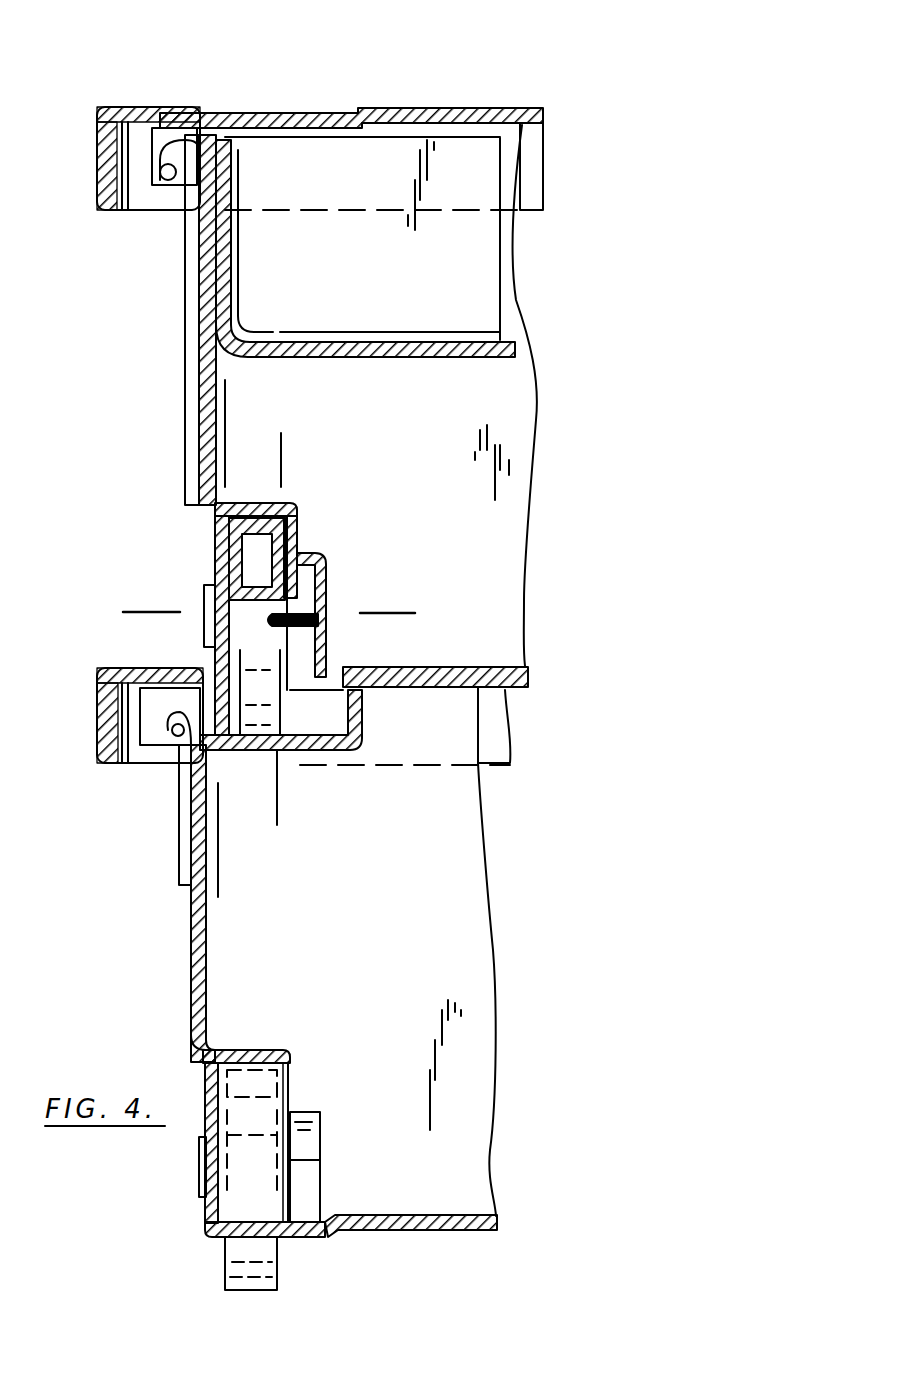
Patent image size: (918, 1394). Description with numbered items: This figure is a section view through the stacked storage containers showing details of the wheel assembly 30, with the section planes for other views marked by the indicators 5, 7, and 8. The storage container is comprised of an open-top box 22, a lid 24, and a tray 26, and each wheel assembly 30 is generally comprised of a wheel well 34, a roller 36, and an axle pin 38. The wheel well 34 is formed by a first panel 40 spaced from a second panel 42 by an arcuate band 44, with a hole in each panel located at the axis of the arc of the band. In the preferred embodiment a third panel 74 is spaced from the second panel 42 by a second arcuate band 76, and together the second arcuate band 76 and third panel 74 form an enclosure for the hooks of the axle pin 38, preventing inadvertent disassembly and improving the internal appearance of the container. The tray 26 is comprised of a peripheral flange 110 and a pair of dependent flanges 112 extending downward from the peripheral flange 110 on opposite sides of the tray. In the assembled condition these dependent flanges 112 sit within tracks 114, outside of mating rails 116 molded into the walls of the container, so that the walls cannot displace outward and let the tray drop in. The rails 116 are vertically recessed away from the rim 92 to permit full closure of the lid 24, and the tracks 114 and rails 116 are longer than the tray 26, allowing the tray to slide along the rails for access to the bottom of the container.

The open-top box 22 is at (185, 400).
The lid 24 is at (552, 107).
The tray 26 is at (485, 267).
The wheel assembly 30 is at (306, 704).
The wheel well 34 is at (306, 507).
The roller 36 is at (178, 778).
The axle pin 38 is at (204, 627).
The first panel 40 is at (299, 538).
The second panel 42 is at (215, 543).
The arcuate band 44 is at (246, 502).
The third panel 74 is at (322, 637).
The second arcuate band 76 is at (313, 553).
The rim 92 is at (152, 117).
The peripheral flange 110 is at (202, 117).
The dependent flange 112 is at (172, 160).
The track 114 is at (167, 180).
The mating rail 116 is at (183, 197).
The section line 5- 5 is at (140, 608).
The section line 7- 7 is at (228, 400).
The section line 8- 8 is at (284, 453).